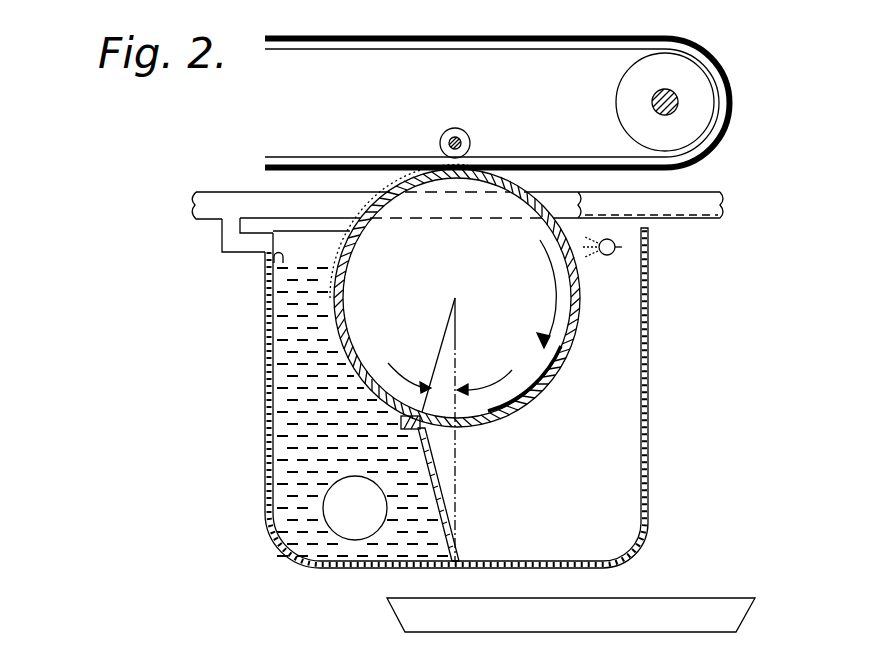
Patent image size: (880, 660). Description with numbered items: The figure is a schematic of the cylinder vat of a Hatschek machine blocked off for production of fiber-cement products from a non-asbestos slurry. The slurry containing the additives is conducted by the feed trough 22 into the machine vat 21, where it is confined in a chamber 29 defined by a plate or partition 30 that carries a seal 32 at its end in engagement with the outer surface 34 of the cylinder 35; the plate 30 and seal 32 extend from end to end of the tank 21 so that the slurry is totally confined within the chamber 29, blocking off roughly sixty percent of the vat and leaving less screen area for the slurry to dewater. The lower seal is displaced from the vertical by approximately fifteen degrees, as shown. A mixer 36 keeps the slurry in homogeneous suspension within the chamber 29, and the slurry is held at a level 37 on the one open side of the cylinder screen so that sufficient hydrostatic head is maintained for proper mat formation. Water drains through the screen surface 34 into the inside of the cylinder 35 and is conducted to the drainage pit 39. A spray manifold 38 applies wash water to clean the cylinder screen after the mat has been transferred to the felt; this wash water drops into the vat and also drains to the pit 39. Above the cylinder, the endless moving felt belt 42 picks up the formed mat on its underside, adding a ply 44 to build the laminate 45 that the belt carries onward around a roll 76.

The machine vat 21 is at (649, 375).
The feed trough 22 is at (703, 222).
The chamber 29 is at (268, 400).
The plate or partition 30 is at (441, 475).
The seal 32 is at (420, 430).
The outer surface 34 is at (580, 296).
The cylinder 35 is at (548, 382).
The mixer 36 is at (323, 506).
The level 37 is at (270, 262).
The spray manifold 38 is at (622, 247).
The drainage pit 39 is at (748, 612).
The felt belt 42 is at (348, 50).
The third ply 44 is at (396, 180).
The three-ply laminate 45 is at (700, 163).
The belt roller 76 is at (618, 80).